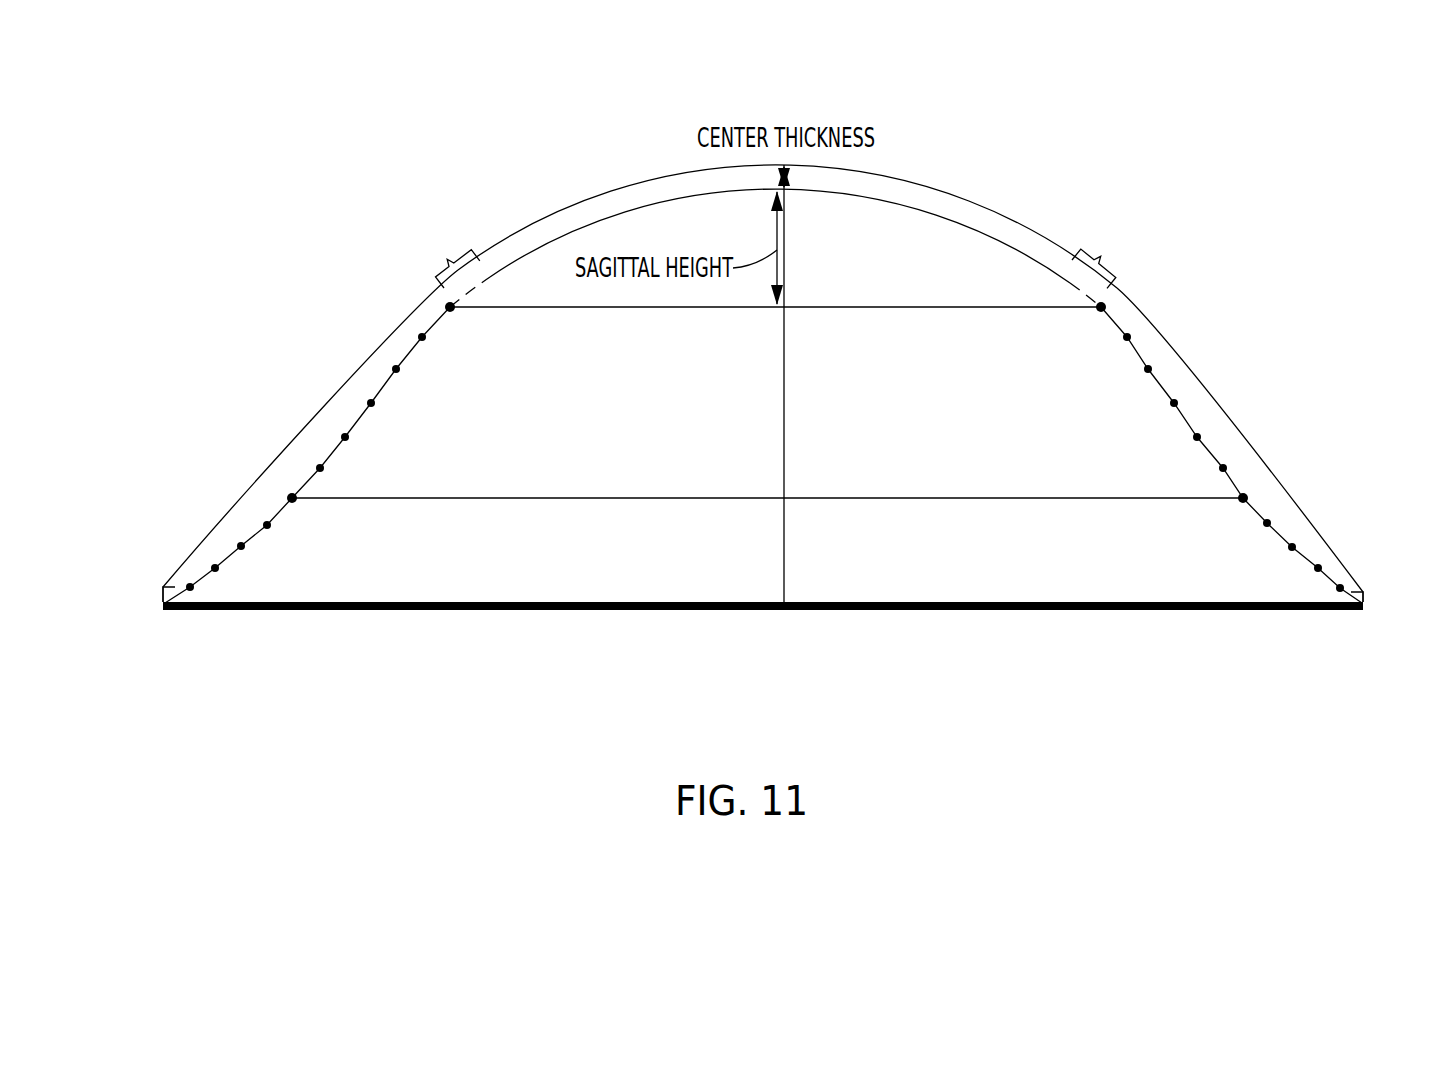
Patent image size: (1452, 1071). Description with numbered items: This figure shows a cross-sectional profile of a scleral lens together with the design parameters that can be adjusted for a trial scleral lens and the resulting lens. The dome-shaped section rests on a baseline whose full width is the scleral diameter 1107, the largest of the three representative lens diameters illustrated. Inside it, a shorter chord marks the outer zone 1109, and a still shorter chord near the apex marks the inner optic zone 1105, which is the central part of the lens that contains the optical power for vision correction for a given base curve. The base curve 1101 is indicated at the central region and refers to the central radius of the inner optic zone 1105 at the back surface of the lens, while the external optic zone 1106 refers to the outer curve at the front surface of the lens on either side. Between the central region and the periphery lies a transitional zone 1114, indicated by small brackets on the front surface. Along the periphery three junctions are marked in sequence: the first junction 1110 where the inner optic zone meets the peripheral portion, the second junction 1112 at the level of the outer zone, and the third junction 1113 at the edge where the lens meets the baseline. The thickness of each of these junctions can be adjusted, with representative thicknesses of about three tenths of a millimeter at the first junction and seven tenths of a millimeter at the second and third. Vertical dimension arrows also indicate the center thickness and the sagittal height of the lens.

The base curve 1101 is at (1068, 140).
The inner optic zone 1105 is at (922, 305).
The external optic zone 1106 is at (1300, 170).
The scleral diameter 1107 is at (787, 618).
The outer zone 1109 is at (940, 492).
The junction 1 1110 is at (378, 332).
The junction 2 1112 is at (312, 406).
The junction 3 1113 is at (227, 512).
The transitional zone 1114 is at (1120, 250).